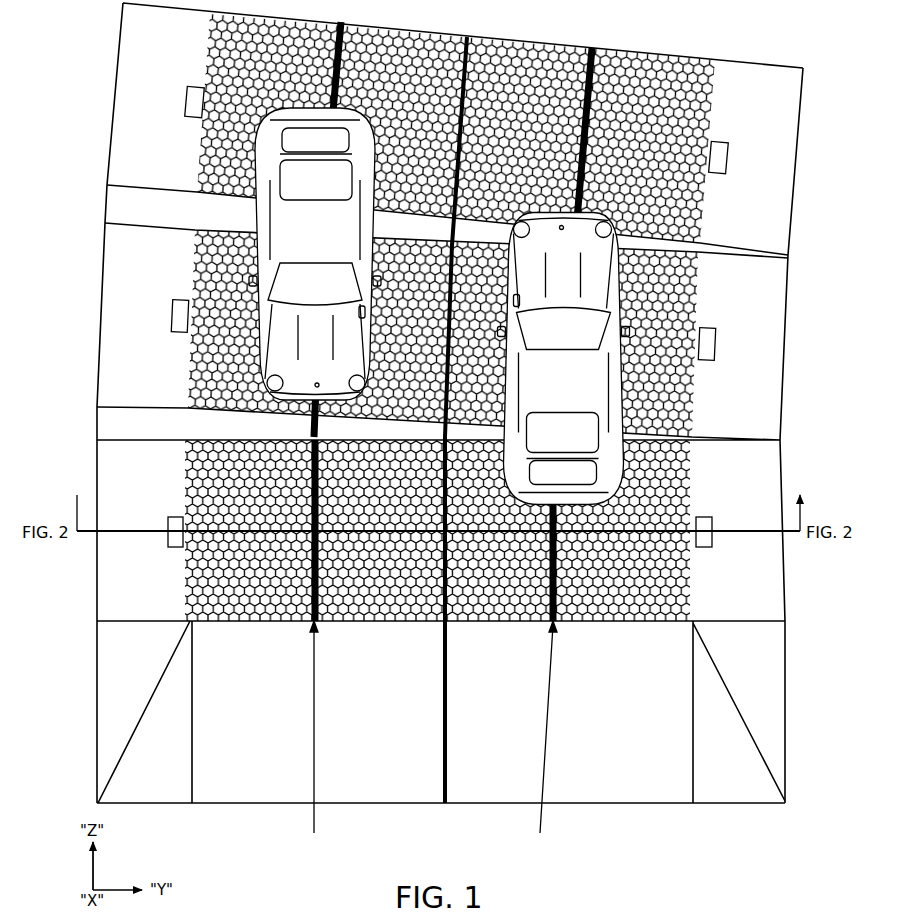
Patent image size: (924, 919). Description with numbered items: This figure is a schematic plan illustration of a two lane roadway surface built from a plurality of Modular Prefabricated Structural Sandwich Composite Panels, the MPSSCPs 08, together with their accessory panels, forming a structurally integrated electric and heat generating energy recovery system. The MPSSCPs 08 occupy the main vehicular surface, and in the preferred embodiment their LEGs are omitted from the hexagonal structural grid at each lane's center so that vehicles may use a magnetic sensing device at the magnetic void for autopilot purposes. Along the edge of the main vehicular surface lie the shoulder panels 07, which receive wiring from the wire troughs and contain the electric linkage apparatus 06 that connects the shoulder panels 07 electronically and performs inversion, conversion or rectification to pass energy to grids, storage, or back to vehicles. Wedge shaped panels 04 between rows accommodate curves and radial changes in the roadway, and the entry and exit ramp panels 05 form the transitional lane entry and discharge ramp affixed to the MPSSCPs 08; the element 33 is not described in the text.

The wedge shaped panel 04 is at (158, 210).
The entry and exit ramp panel 05 is at (297, 745).
The electric linkage apparatus 06 is at (185, 104).
The shoulder panel 07 is at (158, 150).
The Modular Prefabricated Structural Sandwich Composite Panel (MPSSCP) 08 is at (207, 58).
The reinforced column 33 is at (314, 833).